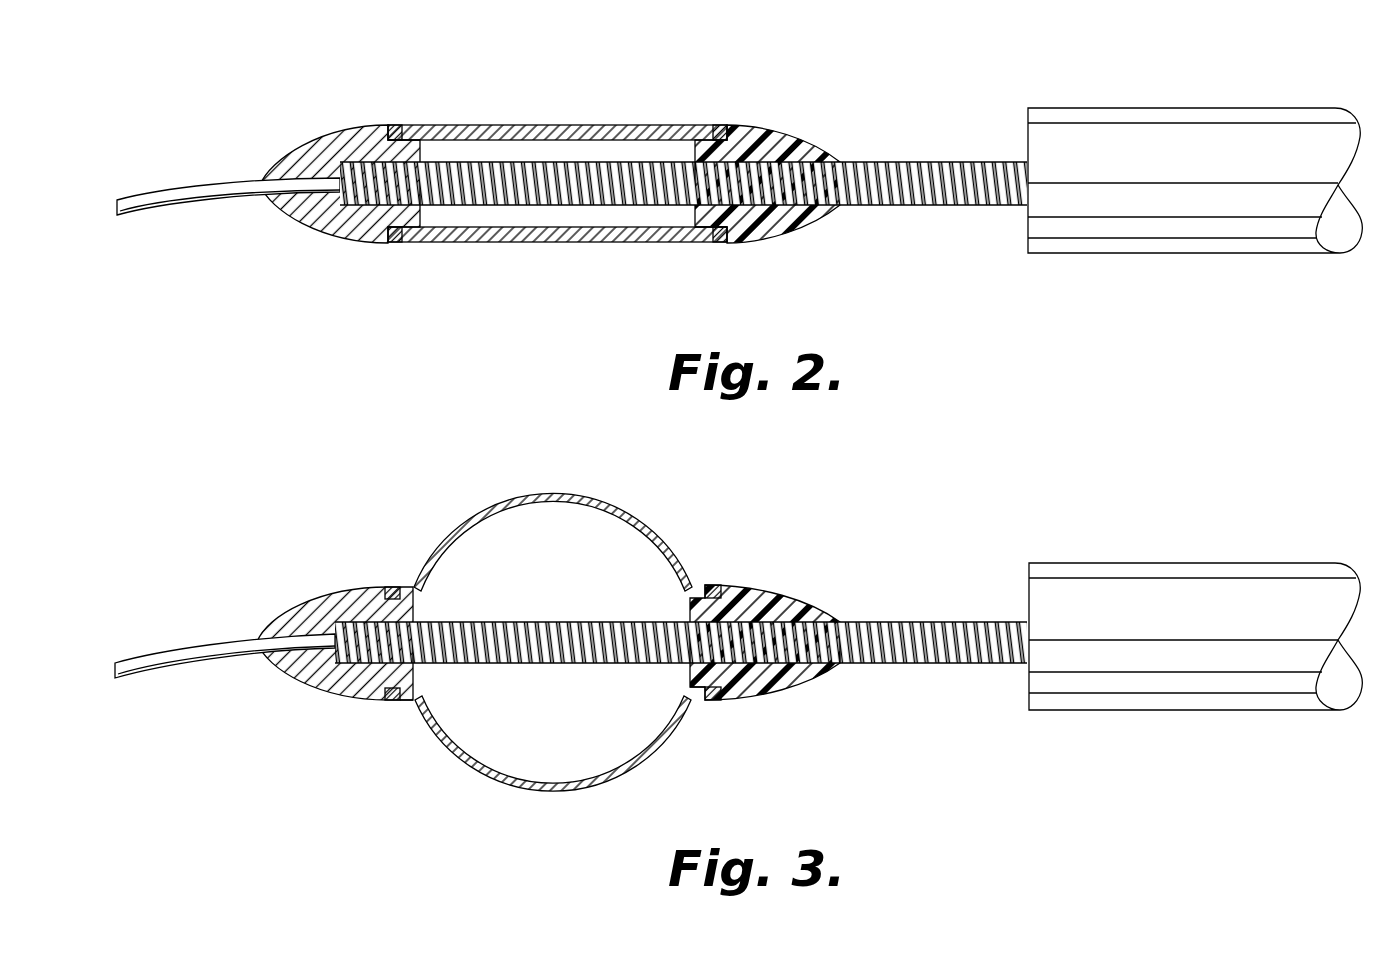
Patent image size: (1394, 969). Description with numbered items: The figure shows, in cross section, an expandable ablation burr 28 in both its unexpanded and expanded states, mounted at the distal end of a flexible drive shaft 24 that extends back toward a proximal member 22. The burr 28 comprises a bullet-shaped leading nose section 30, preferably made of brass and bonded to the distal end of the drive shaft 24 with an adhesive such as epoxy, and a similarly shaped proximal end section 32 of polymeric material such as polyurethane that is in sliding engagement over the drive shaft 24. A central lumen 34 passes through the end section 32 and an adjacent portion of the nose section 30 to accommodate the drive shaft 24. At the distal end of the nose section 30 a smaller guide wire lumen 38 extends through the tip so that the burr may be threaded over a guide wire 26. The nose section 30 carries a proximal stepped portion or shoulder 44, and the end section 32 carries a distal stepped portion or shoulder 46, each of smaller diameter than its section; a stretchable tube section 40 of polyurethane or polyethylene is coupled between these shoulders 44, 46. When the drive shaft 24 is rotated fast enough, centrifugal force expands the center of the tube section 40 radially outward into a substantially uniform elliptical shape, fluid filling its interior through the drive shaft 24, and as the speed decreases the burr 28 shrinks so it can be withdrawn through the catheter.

In FIG. 2, the handle 22 is at (1181, 138).
In FIG. 3, the handle 22 is at (1203, 592).
In FIG. 2, the flexible drive shaft 24 is at (918, 205).
In FIG. 3, the flexible drive shaft 24 is at (938, 625).
In FIG. 2, the guide wire 26 is at (160, 175).
In FIG. 3, the guide wire 26 is at (146, 645).
In FIG. 2, the expandable ablation burr 28 is at (728, 93).
In FIG. 3, the expandable ablation burr 28 is at (655, 506).
In FIG. 2, the leading nose section 30 is at (318, 137).
In FIG. 3, the leading nose section 30 is at (302, 598).
In FIG. 2, the proximal end section 32 is at (775, 135).
In FIG. 3, the proximal end section 32 is at (760, 585).
In FIG. 2, the central lumen 34 is at (373, 160).
In FIG. 3, the central lumen 34 is at (371, 622).
In FIG. 2, the guide wire lumen 38 is at (287, 195).
In FIG. 2, the tube section 40 is at (563, 122).
In FIG. 3, the tube section 40 is at (548, 493).
In FIG. 2, the proximal stepped portion 44 is at (410, 224).
In FIG. 3, the proximal stepped portion 44 is at (405, 683).
In FIG. 2, the distal stepped portion 46 is at (704, 207).
In FIG. 3, the distal stepped portion 46 is at (710, 690).